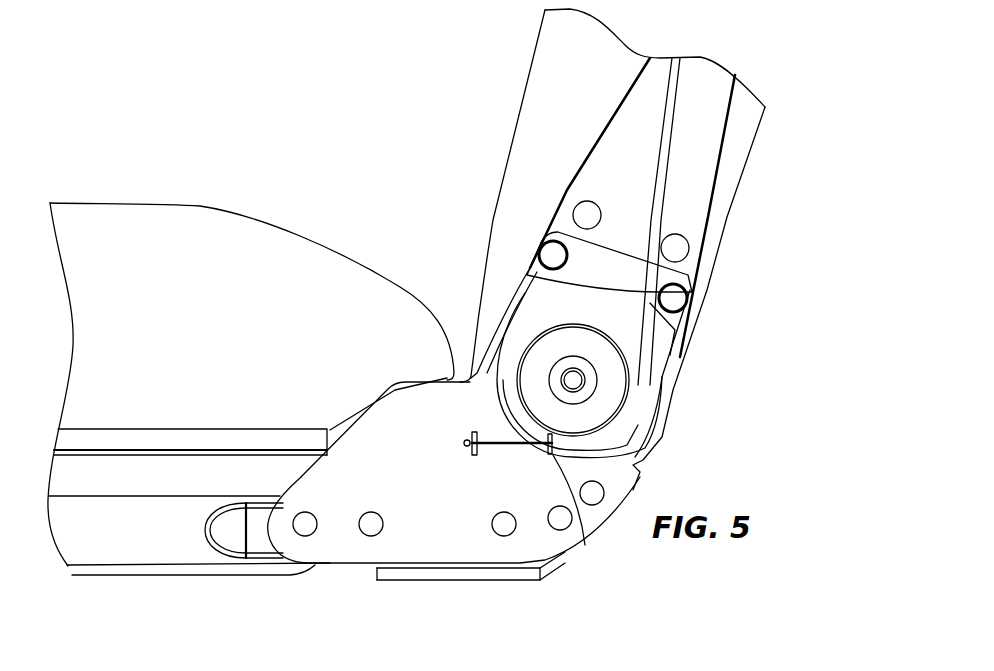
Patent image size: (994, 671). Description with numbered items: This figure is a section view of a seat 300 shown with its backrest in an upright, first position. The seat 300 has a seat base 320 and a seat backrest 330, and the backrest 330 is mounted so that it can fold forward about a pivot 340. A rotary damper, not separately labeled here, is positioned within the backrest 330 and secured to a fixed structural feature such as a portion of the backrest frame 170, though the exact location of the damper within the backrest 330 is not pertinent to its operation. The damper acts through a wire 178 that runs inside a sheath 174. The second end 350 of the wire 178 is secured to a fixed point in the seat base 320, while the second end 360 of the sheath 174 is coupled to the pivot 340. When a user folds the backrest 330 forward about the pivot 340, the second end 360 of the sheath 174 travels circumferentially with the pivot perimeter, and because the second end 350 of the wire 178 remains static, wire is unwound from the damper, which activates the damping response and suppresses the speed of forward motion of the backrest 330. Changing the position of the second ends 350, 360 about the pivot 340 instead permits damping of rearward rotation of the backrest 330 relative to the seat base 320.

The seat 300 is at (335, 150).
The seat base 320 is at (192, 225).
The seat backrest 330 is at (718, 258).
The sheath 174 is at (672, 118).
The seat back frame 170 is at (667, 198).
The pivot 340 is at (578, 377).
The second end of the wire 350 is at (484, 452).
The wire 178 is at (515, 445).
The second end of the sheath 360 is at (560, 463).